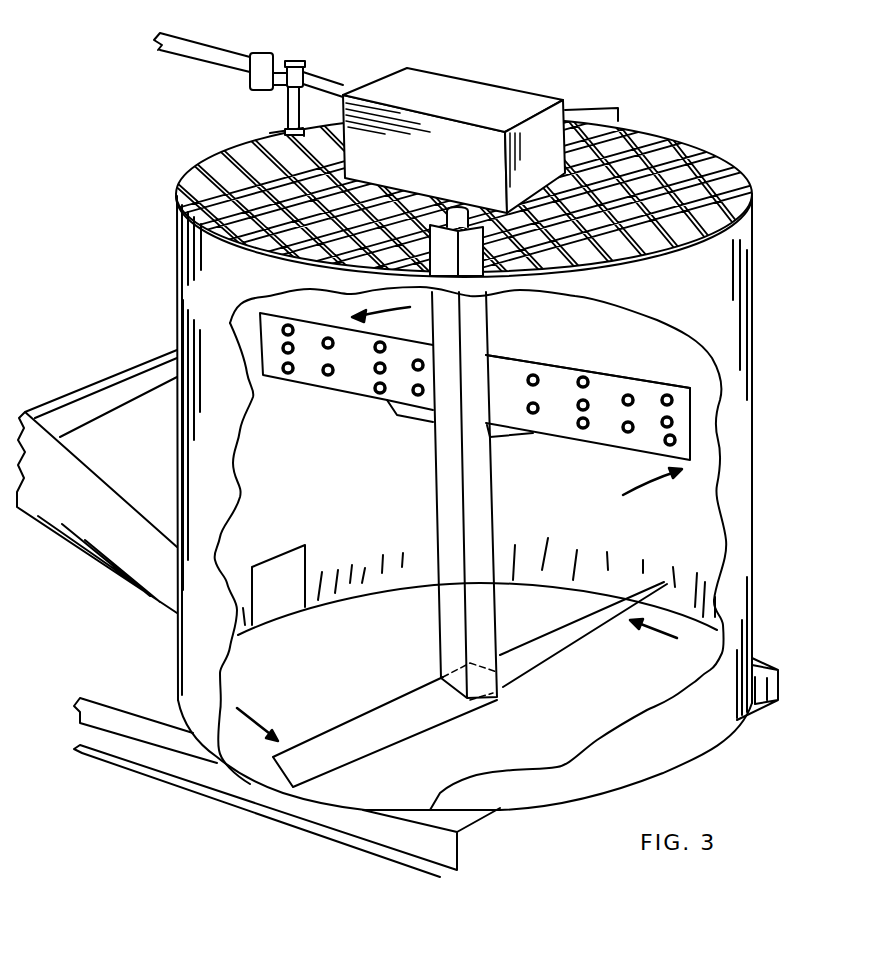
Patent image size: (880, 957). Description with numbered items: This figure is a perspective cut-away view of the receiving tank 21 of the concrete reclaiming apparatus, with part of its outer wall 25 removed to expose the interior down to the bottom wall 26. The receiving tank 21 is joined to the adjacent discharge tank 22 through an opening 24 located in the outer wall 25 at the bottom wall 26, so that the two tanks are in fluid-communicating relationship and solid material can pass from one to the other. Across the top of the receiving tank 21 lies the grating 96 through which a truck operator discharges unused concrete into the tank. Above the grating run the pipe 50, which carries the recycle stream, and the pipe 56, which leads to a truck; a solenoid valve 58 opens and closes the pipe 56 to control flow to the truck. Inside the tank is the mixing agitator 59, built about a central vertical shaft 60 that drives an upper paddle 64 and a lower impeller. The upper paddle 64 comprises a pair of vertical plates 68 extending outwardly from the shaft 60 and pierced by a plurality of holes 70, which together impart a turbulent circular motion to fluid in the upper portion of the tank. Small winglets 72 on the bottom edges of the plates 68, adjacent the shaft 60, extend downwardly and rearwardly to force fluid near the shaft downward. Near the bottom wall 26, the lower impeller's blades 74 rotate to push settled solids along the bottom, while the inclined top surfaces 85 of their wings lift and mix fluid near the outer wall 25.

The receiving tank 21 is at (753, 314).
The discharge tank 22 is at (100, 474).
The opening/port 24 is at (297, 563).
The outer wall 25 is at (327, 507).
The bottom wall 26 is at (345, 654).
The pipe 50 is at (342, 79).
The pipe 56 is at (213, 46).
The solenoid valve 58 is at (263, 55).
The mixing agitator 59 is at (500, 314).
The central vertical shaft 60 is at (497, 512).
The upper paddle 64 is at (553, 358).
The vertical plates 68 is at (507, 355).
The holes 70 is at (587, 402).
The winglets 72 is at (513, 440).
The blades 74 is at (327, 735).
The top surfaces 85 is at (580, 608).
The grating 96 is at (670, 157).